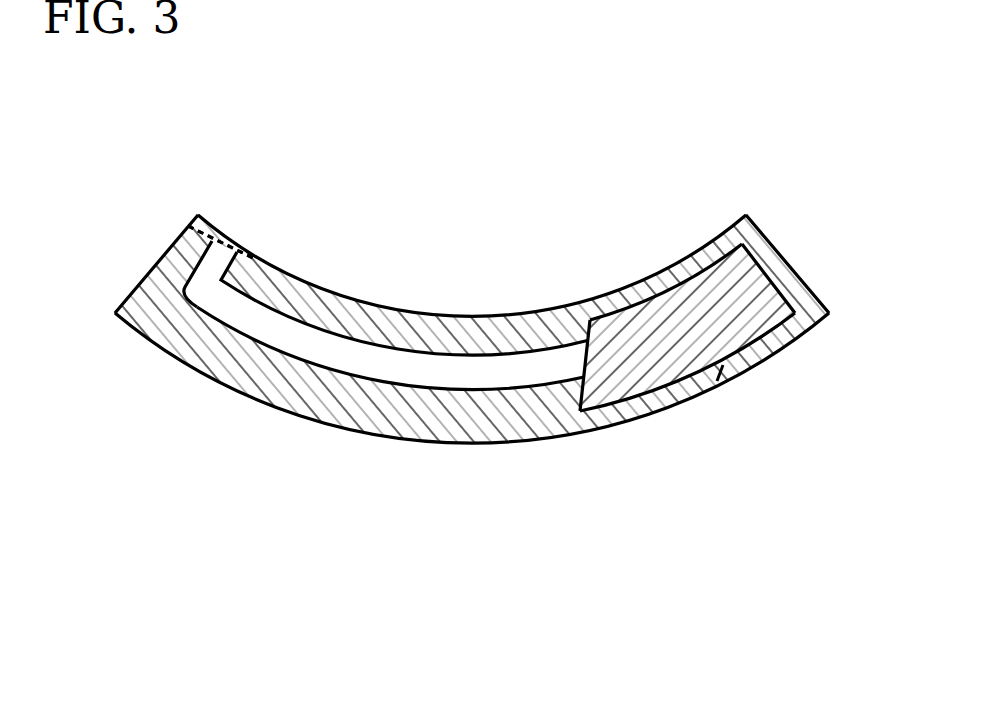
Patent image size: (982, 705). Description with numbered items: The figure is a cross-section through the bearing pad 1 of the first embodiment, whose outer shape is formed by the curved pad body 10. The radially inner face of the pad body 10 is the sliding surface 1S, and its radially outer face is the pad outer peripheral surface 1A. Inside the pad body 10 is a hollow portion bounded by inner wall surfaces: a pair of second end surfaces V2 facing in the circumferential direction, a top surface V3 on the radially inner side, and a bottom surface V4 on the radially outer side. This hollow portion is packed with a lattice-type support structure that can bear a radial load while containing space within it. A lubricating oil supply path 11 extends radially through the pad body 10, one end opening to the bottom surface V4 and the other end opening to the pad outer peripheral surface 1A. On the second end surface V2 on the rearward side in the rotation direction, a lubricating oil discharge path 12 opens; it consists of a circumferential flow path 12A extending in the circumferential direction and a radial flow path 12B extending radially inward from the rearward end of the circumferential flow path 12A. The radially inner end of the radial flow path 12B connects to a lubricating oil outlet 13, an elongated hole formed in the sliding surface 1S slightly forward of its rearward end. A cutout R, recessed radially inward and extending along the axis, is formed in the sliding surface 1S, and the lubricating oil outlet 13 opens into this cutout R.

The bearing pad 1 is at (122, 186).
The pad body 10 is at (482, 427).
The sliding surface 1S is at (472, 316).
The pad outer peripheral surface 1A is at (290, 414).
The lubricating oil discharge path 12 is at (340, 345).
The circumferential flow path 12A is at (392, 382).
The radial flow path 12B is at (203, 273).
The lubricating oil outlet 13 is at (238, 252).
The cutout R is at (200, 232).
The second end surface V2 is at (588, 320).
The top surface V3 is at (670, 294).
The bottom surface V4 is at (642, 372).
The lubricating oil supply path 11 is at (718, 382).